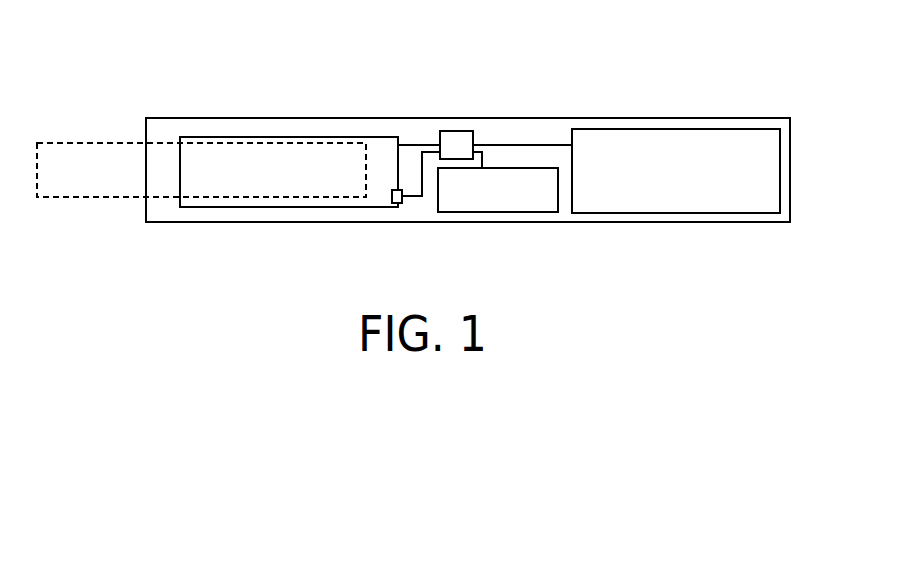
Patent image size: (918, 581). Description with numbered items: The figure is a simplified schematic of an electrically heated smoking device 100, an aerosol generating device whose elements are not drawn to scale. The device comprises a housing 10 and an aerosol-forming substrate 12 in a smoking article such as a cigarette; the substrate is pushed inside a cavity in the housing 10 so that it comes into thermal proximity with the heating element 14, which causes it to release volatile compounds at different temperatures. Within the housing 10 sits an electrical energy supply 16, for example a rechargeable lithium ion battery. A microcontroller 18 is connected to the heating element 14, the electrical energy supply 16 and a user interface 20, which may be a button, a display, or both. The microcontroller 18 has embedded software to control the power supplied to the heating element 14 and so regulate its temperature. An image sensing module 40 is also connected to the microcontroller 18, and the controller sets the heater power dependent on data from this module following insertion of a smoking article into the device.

The electrically heated smoking device 100 is at (126, 70).
The housing 10 is at (202, 117).
The aerosol-forming substrate 12 is at (78, 185).
The heating element 14 is at (380, 144).
The electrical energy supply 16 is at (678, 147).
The microcontroller 18 is at (456, 138).
The user interface 20 is at (500, 198).
The image sensing module 40 is at (404, 201).